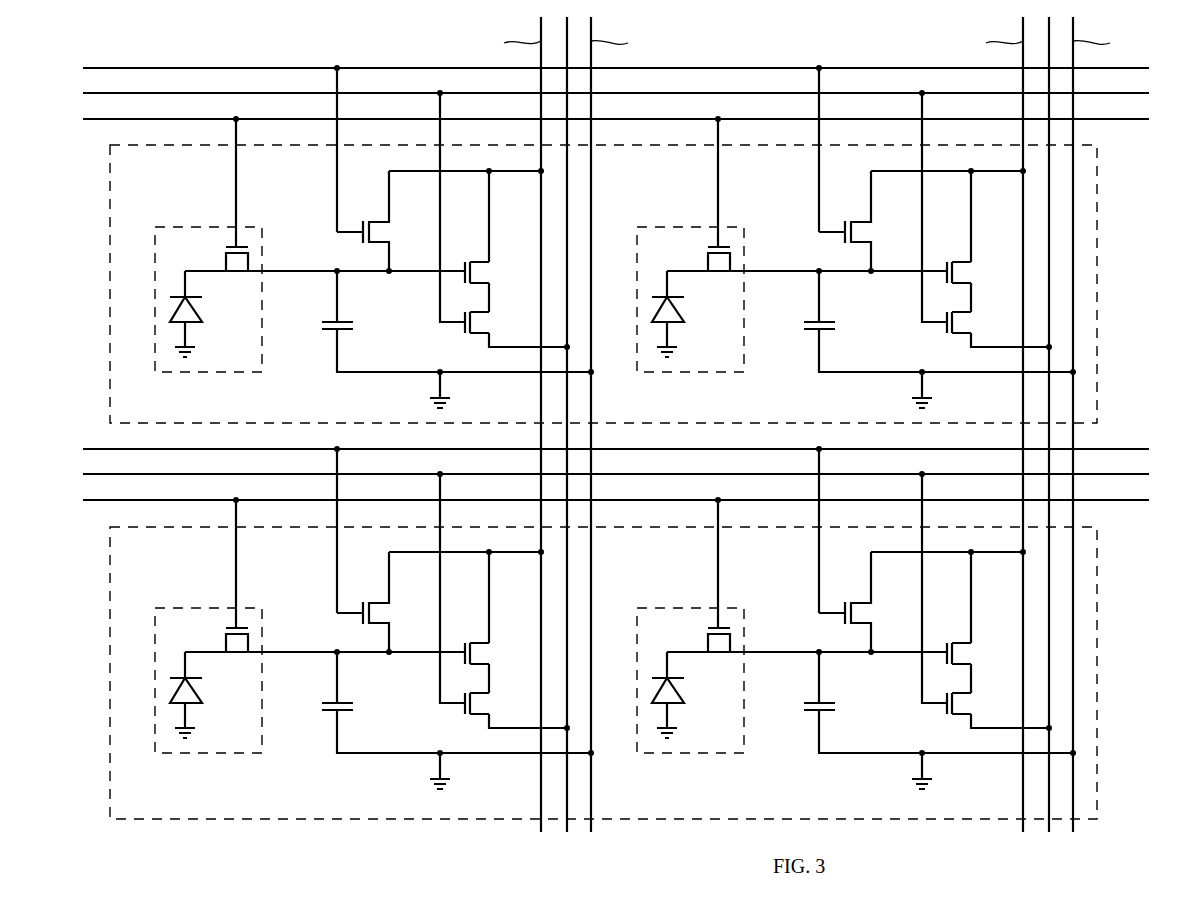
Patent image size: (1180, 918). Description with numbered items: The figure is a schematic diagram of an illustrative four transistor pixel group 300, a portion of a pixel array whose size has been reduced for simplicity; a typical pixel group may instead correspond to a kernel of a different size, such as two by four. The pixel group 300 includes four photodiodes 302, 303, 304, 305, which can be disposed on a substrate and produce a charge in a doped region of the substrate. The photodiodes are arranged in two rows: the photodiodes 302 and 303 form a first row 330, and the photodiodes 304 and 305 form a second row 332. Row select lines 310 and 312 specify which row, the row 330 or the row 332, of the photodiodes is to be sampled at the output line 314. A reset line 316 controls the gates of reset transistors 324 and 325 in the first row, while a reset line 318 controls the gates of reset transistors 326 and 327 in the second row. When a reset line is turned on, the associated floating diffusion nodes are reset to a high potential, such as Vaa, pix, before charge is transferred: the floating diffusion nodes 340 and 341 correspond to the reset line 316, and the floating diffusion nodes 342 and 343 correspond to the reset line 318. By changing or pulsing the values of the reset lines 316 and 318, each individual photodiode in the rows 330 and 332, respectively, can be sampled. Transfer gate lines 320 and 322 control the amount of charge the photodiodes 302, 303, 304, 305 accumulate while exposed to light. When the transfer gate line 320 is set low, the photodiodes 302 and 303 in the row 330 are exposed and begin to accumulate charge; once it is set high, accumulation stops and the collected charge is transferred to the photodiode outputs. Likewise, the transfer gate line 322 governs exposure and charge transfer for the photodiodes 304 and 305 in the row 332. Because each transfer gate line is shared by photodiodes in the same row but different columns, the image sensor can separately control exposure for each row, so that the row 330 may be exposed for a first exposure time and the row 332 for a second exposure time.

The four transistor pixel group 300 is at (264, 24).
The photodiode 302 is at (217, 374).
The photodiode 303 is at (690, 259).
The photodiode 304 is at (208, 641).
The photodiode 305 is at (690, 641).
The row select line 310 is at (125, 93).
The row select line 312 is at (125, 474).
The output line 314 is at (567, 789).
The reset line 316 is at (125, 68).
The reset line 318 is at (125, 449).
The transfer gate line 320 is at (125, 119).
The transfer gate line 322 is at (125, 500).
The reset transistor 324 is at (380, 233).
The reset transistor 325 is at (864, 221).
The reset transistor 326 is at (382, 602).
The reset transistor 327 is at (864, 602).
The row 330 is at (1097, 217).
The row 332 is at (1097, 598).
The floating diffusion node 340 is at (388, 273).
The floating diffusion node 341 is at (807, 289).
The floating diffusion node 342 is at (325, 670).
The floating diffusion node 343 is at (807, 670).